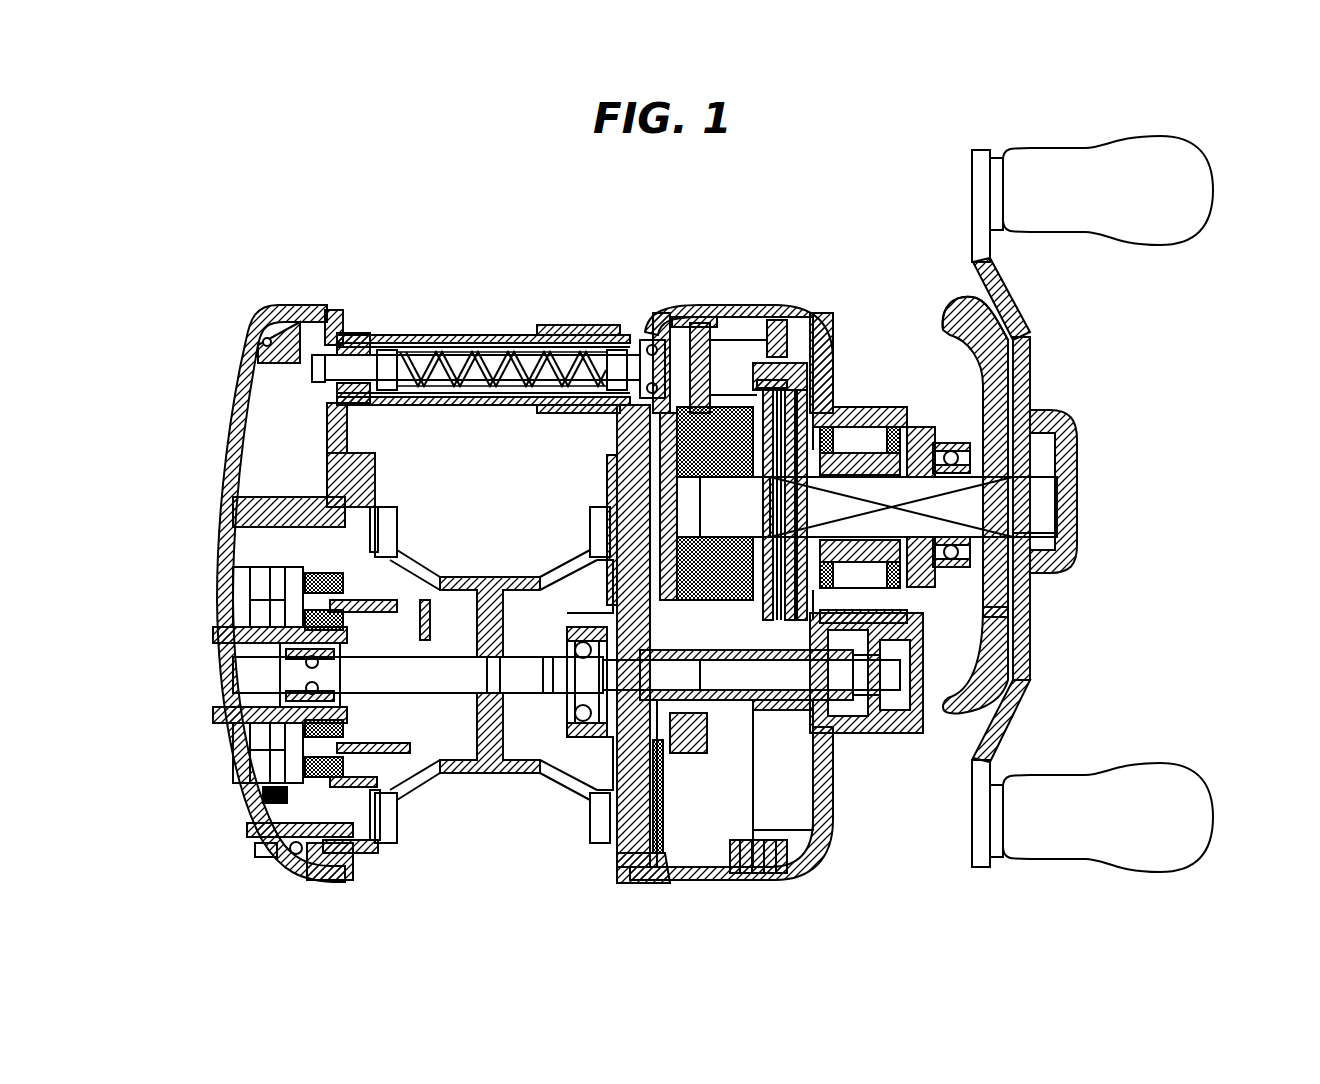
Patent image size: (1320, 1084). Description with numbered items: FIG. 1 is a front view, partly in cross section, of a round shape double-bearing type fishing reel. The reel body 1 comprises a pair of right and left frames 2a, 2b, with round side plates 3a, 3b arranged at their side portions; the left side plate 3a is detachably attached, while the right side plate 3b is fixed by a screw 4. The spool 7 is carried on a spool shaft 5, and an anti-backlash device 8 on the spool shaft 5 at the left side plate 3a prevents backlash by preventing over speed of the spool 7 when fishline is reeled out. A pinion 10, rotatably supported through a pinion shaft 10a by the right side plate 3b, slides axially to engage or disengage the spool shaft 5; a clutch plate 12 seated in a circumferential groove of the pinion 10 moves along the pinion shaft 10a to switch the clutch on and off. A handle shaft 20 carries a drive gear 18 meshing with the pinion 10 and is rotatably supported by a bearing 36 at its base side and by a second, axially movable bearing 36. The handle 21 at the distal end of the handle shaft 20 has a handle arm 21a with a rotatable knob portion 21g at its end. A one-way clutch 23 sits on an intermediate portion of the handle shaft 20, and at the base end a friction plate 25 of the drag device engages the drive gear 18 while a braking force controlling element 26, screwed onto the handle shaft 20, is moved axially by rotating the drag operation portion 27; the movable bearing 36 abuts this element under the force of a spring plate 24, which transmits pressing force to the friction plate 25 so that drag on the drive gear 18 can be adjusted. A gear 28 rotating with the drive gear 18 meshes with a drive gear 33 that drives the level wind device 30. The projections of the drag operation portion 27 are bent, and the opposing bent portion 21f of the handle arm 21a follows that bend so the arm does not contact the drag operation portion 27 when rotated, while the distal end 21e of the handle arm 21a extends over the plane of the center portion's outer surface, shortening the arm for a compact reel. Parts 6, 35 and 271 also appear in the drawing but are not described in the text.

The reel body 1 is at (872, 355).
The left frame 2a is at (342, 320).
The right frame 2b is at (645, 322).
The left side plate 3a is at (241, 387).
The right side plate 3b is at (848, 330).
The screw 4 is at (752, 875).
The spool shaft 5 is at (530, 683).
The bearing 6 is at (282, 683).
The spool 7 is at (487, 578).
The anti-backlash device 8 is at (390, 752).
The pinion 10 is at (730, 700).
The pinion shaft 10a is at (785, 702).
The clutch plate 12 is at (703, 702).
The drive gear 18 is at (750, 372).
The handle shaft 20 is at (1050, 497).
The handle 21 is at (1056, 466).
The handle arm 21a is at (1058, 508).
The distal end of handle arm 21e is at (960, 150).
The bent portion of handle arm 21f is at (1000, 255).
The knob portion 21g is at (1150, 217).
The one-way clutch 23 is at (860, 443).
The spring plate 24 is at (920, 428).
The friction plate 25 is at (813, 320).
The braking force controlling element 26 is at (968, 623).
The drag operation portion 27 is at (1006, 457).
The star drag top portion 271 is at (965, 360).
The gear 28 is at (678, 433).
The level wind device 30 is at (460, 340).
The drive gear for level wind device 33 is at (702, 322).
The support member 35 is at (612, 462).
The bearing 36 is at (1020, 423).